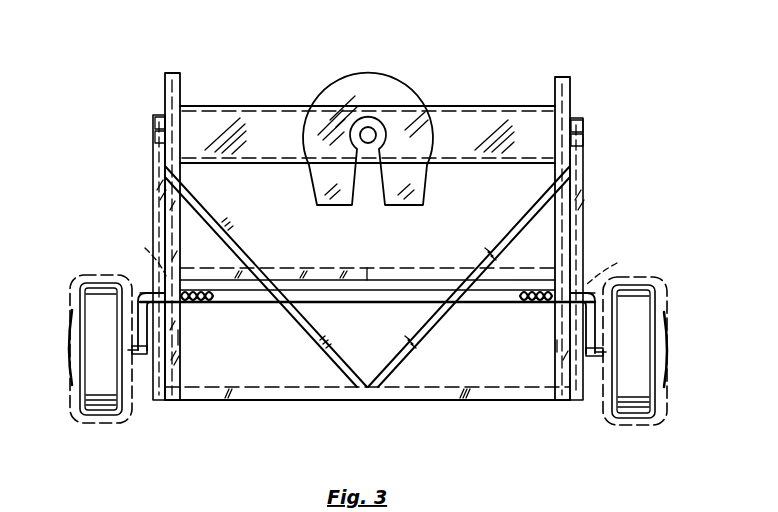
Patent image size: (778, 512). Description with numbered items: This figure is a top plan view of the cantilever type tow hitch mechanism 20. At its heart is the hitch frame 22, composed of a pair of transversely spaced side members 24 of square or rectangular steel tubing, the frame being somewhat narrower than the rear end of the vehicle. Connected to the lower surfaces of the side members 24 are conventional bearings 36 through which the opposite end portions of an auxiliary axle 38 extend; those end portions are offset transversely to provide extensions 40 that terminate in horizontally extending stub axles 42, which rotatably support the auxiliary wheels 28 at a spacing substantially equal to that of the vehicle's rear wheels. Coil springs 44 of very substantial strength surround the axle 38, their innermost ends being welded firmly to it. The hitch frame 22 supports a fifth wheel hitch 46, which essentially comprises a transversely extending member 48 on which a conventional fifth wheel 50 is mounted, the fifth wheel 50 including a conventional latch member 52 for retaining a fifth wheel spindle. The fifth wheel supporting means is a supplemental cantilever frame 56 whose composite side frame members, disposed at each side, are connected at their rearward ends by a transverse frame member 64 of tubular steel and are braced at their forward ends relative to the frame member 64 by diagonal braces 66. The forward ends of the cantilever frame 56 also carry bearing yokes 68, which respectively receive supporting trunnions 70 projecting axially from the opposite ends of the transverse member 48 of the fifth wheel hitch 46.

The tow hitch mechanism 20 is at (592, 233).
The hitch frame 22 is at (180, 364).
The side members 24 is at (178, 337).
The auxiliary wheels 28 is at (92, 384).
The bearings 36 is at (383, 256).
The auxiliary axle 38 is at (338, 300).
The extensions 40 is at (138, 316).
The stub axles 42 is at (135, 358).
The coil springs 44 is at (216, 294).
The fifth wheel hitch 46 is at (424, 95).
The transversely extending member 48 is at (505, 124).
The fifth wheel 50 is at (340, 93).
The latch member 52 is at (372, 148).
The supplemental cantilever frame 56 is at (221, 223).
The transverse frame member 64 is at (280, 395).
The diagonal braces 66 is at (232, 240).
The bearing yokes 68 is at (158, 123).
The supporting trunnions 70 is at (157, 136).